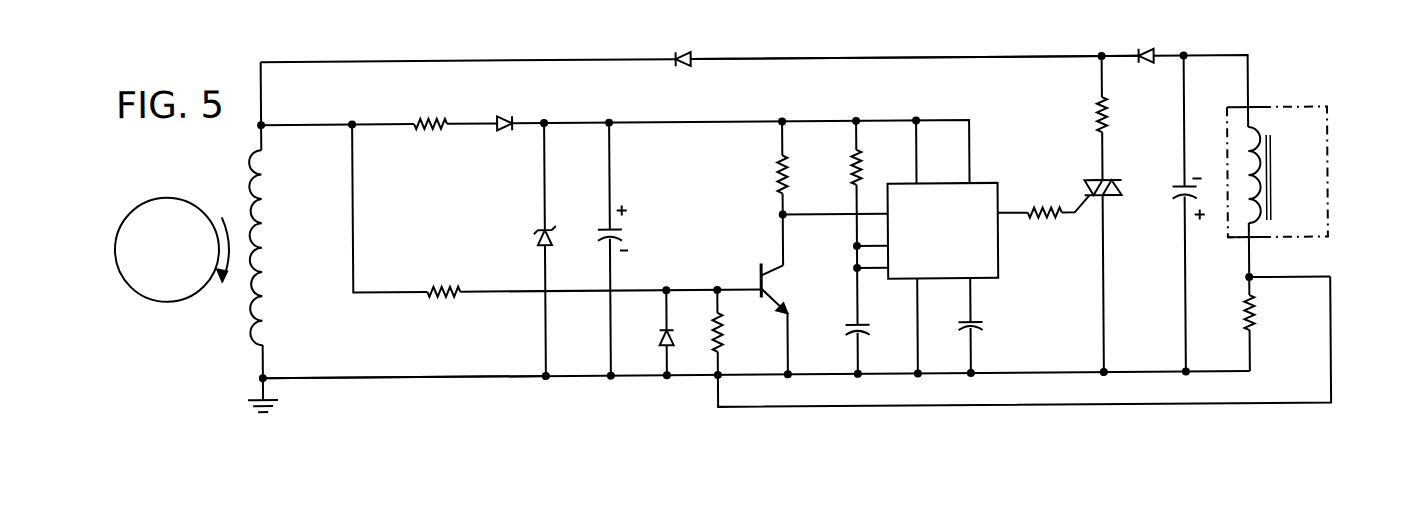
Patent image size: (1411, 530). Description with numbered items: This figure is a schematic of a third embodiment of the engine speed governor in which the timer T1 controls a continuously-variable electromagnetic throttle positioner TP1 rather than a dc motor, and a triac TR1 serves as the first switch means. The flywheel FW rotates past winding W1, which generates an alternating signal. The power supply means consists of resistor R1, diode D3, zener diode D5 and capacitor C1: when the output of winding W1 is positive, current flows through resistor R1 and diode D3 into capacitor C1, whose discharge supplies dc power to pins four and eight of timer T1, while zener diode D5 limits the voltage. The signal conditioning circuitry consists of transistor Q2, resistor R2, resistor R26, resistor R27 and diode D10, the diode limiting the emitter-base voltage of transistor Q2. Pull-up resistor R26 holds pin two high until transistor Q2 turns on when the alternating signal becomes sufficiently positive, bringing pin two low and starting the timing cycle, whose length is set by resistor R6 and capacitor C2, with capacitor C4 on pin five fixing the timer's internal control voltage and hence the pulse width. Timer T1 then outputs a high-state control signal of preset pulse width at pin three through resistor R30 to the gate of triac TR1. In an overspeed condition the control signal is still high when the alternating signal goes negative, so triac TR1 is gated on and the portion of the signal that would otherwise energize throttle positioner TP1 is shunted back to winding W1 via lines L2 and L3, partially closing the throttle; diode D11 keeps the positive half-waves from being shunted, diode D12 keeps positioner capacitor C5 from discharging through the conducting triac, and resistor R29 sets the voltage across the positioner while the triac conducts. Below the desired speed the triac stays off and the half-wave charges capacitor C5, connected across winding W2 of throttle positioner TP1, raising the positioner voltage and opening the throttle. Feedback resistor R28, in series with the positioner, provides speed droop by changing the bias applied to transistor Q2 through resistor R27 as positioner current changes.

The flywheel FW is at (144, 200).
The winding W1 is at (263, 270).
The resistor R1 is at (444, 115).
The diode D3 is at (503, 114).
The zener diode D5 is at (530, 235).
The capacitor C1 is at (627, 236).
The resistor R2 is at (452, 282).
The line L2 is at (507, 377).
The line L3 is at (793, 58).
The diode D11 is at (682, 52).
The diode D12 is at (1158, 52).
The diode D10 is at (660, 339).
The resistor R27 is at (723, 323).
The transistor Q2 is at (758, 280).
The pull-up resistor R26 is at (778, 172).
The resistor R6 is at (850, 166).
The timing capacitor C2 is at (860, 326).
The timer T1 is at (997, 184).
The capacitor C4 is at (985, 325).
The resistor R30 is at (1045, 218).
The triac TR1 is at (1113, 183).
The resistor R29 is at (1096, 117).
The positioner capacitor C5 is at (1176, 200).
The winding W2 is at (1253, 151).
The throttle positioner TP1 is at (1330, 143).
The feedback resistor R28 is at (1257, 302).